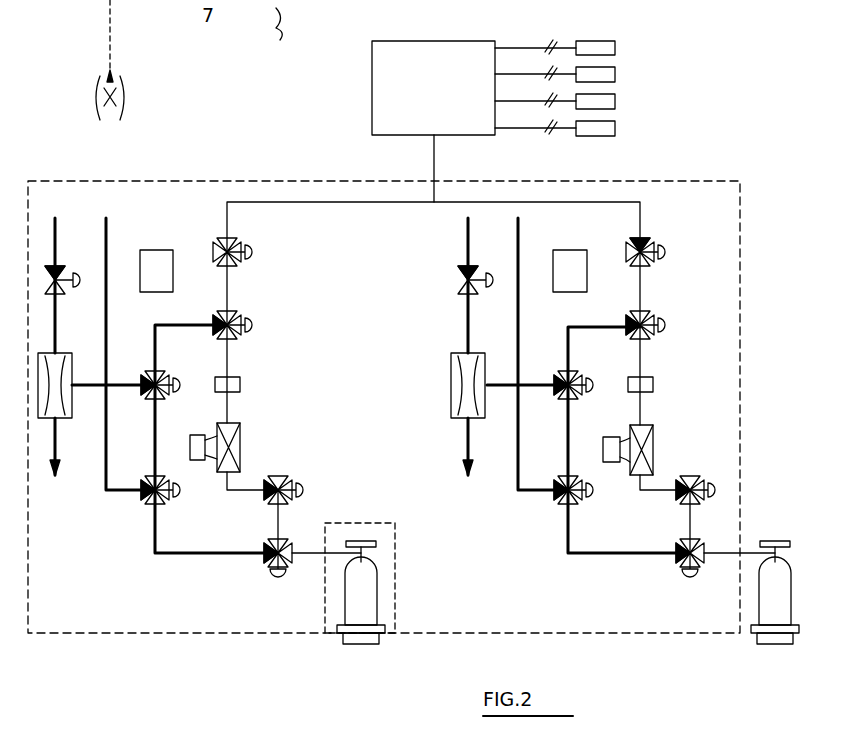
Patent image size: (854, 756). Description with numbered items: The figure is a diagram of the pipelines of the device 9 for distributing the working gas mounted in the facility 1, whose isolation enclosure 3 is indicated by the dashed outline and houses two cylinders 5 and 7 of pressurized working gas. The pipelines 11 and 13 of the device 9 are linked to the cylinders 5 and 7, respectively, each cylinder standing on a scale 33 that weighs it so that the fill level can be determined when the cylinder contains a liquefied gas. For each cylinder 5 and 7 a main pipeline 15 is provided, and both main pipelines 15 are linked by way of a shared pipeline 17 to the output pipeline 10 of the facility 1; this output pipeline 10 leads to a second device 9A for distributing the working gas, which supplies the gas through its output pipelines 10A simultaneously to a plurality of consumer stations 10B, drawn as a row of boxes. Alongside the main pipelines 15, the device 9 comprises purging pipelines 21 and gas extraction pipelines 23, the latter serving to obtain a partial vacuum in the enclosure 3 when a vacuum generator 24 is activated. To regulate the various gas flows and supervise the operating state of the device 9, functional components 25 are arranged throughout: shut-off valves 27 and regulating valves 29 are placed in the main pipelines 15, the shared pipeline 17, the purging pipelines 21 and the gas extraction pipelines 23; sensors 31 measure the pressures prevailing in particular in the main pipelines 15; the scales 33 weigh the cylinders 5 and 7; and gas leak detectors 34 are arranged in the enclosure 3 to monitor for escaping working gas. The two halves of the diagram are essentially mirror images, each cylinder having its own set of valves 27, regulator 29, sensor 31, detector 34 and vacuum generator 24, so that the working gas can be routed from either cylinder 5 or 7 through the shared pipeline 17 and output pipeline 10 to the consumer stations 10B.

The facility 1 is at (158, 178).
The isolation enclosure 3 is at (276, 28).
The cylinder 5 is at (378, 592).
The cylinder 7 is at (765, 598).
The device for distributing the working gas 9 is at (245, 181).
The second device for distributing the working gas 9A is at (400, 88).
The output pipeline 10 is at (436, 180).
The output pipelines 10A is at (533, 128).
The consumer stations 10B is at (616, 48).
The pipeline 11 is at (322, 552).
The pipeline 13 is at (732, 553).
The main pipeline 15 is at (229, 300).
The shared pipeline 17 is at (585, 200).
The purging pipelines 21 is at (108, 265).
The gas extraction pipelines 23 is at (55, 252).
The vacuum generator 24 is at (75, 415).
The functional components 25 is at (146, 307).
The shut-off valves 27 is at (58, 292).
The regulating valves 29 is at (205, 462).
The sensors 31 is at (241, 388).
The scales 33 is at (368, 645).
The gas leak detectors 34 is at (162, 265).